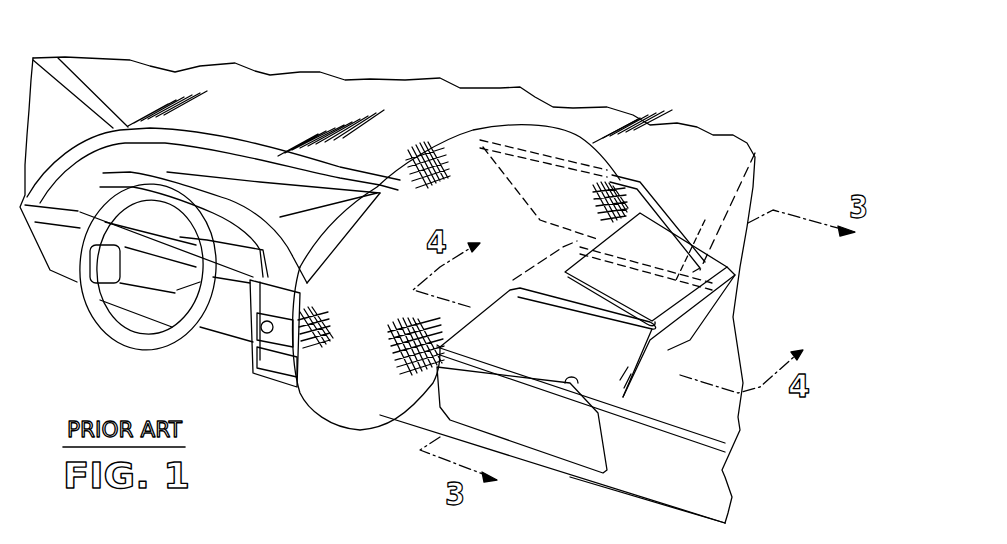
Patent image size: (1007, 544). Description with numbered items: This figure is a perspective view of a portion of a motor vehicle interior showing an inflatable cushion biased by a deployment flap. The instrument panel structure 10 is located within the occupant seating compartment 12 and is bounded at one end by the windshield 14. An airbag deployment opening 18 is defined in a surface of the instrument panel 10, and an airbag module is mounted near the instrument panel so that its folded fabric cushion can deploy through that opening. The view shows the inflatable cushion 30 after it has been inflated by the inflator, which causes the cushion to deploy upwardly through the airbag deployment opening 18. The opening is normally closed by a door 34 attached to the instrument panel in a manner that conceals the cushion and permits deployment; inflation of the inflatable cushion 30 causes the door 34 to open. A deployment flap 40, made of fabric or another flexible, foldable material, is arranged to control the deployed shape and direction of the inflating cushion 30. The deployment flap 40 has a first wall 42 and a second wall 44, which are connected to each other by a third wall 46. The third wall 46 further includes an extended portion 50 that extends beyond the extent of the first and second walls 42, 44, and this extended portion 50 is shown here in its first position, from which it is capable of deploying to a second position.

The instrument panel structure 10 is at (688, 414).
The occupant seating compartment 12 is at (530, 517).
The windshield 14 is at (423, 107).
The airbag deployment opening 18 is at (563, 383).
The inflatable cushion 30 is at (473, 143).
The door 34 is at (640, 257).
The deployment flap 40 is at (705, 306).
The first wall 42 is at (756, 150).
The second wall 44 is at (510, 348).
The third wall 46 is at (667, 350).
The extended portion 50 is at (678, 272).